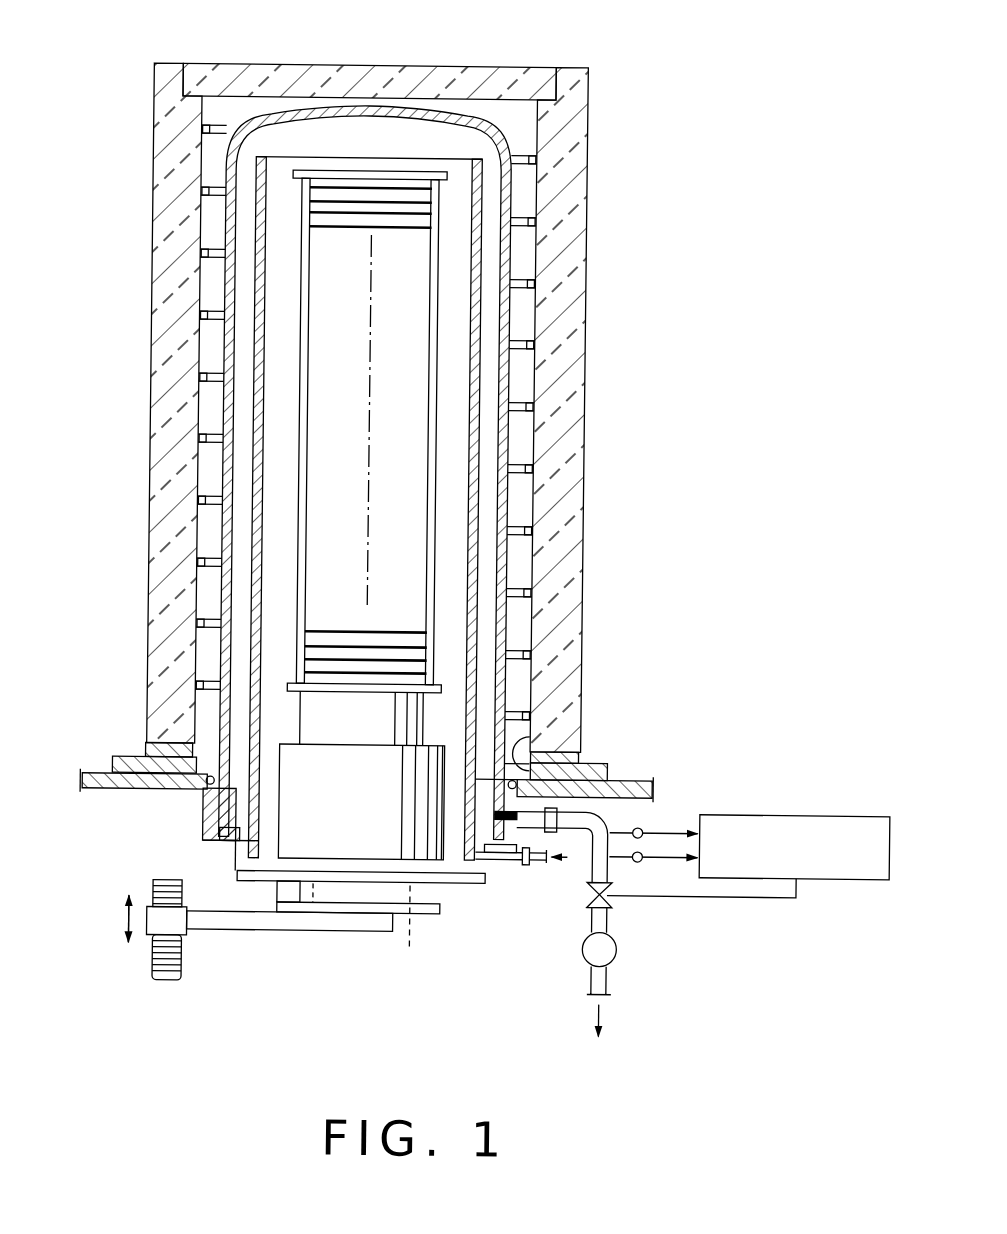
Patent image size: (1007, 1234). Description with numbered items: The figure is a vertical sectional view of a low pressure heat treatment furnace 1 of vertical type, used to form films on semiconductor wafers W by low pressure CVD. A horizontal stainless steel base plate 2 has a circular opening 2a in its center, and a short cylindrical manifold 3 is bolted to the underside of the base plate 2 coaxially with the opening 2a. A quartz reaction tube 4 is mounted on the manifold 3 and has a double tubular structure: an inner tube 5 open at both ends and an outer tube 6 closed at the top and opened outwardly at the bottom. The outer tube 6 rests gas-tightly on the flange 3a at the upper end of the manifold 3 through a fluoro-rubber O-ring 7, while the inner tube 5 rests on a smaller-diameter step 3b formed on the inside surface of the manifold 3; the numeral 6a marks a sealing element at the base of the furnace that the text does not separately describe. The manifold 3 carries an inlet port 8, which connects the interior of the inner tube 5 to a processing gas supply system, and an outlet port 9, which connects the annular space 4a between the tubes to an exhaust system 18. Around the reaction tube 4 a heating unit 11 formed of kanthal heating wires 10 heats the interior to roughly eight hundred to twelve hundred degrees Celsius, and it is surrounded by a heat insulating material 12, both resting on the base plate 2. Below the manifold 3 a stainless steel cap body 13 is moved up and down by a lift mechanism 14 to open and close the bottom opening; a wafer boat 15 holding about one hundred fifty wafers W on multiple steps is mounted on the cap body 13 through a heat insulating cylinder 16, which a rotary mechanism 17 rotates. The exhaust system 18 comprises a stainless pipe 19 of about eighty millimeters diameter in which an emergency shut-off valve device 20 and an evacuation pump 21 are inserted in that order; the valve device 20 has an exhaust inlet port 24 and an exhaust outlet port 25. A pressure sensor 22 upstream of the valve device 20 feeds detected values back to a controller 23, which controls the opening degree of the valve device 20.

The low pressure heat treatment furnace 1 is at (379, 382).
The base plate 2 is at (594, 762).
The circular opening 2a is at (531, 748).
The manifold 3 is at (211, 809).
The flange 3a is at (164, 797).
The smaller-diameter step 3b is at (241, 847).
The reaction tube 4 is at (499, 323).
The annular space 4a is at (489, 624).
The inner tube 5 is at (484, 384).
The outer tube 6 is at (520, 438).
The seal ring 6a is at (213, 762).
The O-ring 7 is at (182, 794).
The inlet port 8 is at (512, 859).
The outlet port 9 is at (539, 820).
The heating wires 10 is at (528, 266).
The heating unit 11 is at (514, 128).
The heat insulating material 12 is at (163, 230).
The cap body 13 is at (267, 878).
The lift mechanism 14 is at (208, 945).
The wafer boat 15 is at (299, 406).
The heat insulating cylinder 16 is at (318, 884).
The rotary mechanism 17 is at (415, 920).
The exhaust system 18 is at (595, 908).
The pipe 19 is at (613, 977).
The emergency shut-off valve device 20 is at (615, 899).
The evacuation pump 21 is at (594, 960).
The pressure sensor 22 is at (646, 850).
The controller 23 is at (850, 875).
The exhaust inlet port 24 is at (602, 809).
The exhaust outlet port 25 is at (605, 920).
The semiconductor wafers W is at (353, 218).